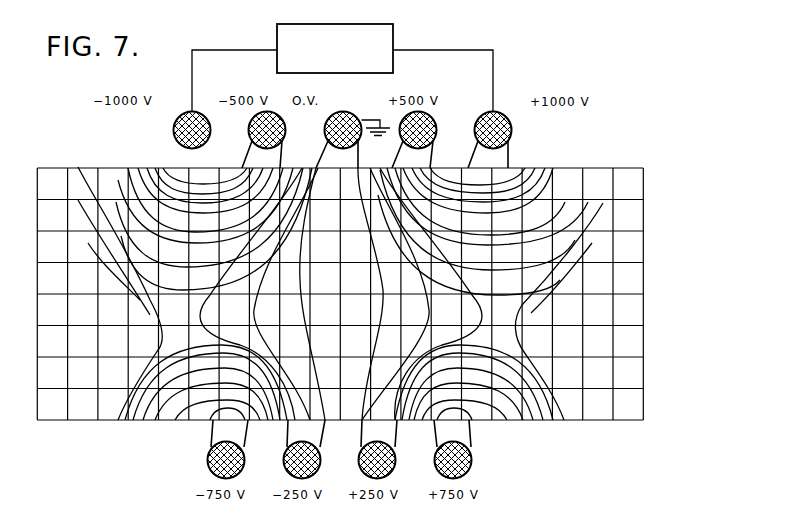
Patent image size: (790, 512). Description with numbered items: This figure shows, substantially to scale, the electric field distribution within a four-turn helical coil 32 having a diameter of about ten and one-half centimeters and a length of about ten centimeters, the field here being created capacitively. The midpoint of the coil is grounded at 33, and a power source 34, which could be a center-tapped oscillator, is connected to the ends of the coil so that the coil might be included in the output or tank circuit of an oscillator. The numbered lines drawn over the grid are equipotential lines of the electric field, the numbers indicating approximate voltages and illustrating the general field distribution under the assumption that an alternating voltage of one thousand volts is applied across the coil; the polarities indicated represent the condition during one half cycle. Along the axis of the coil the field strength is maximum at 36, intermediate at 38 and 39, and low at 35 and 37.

The four-turn helical coil 32 is at (512, 134).
The ground connection 33 is at (383, 116).
The power source 34 is at (393, 32).
The low field strength region 35 is at (185, 320).
The maximum field strength region 36 is at (367, 319).
The low field strength region 37 is at (520, 320).
The intermediate field strength region 38 is at (285, 320).
The intermediate field strength region 39 is at (412, 319).